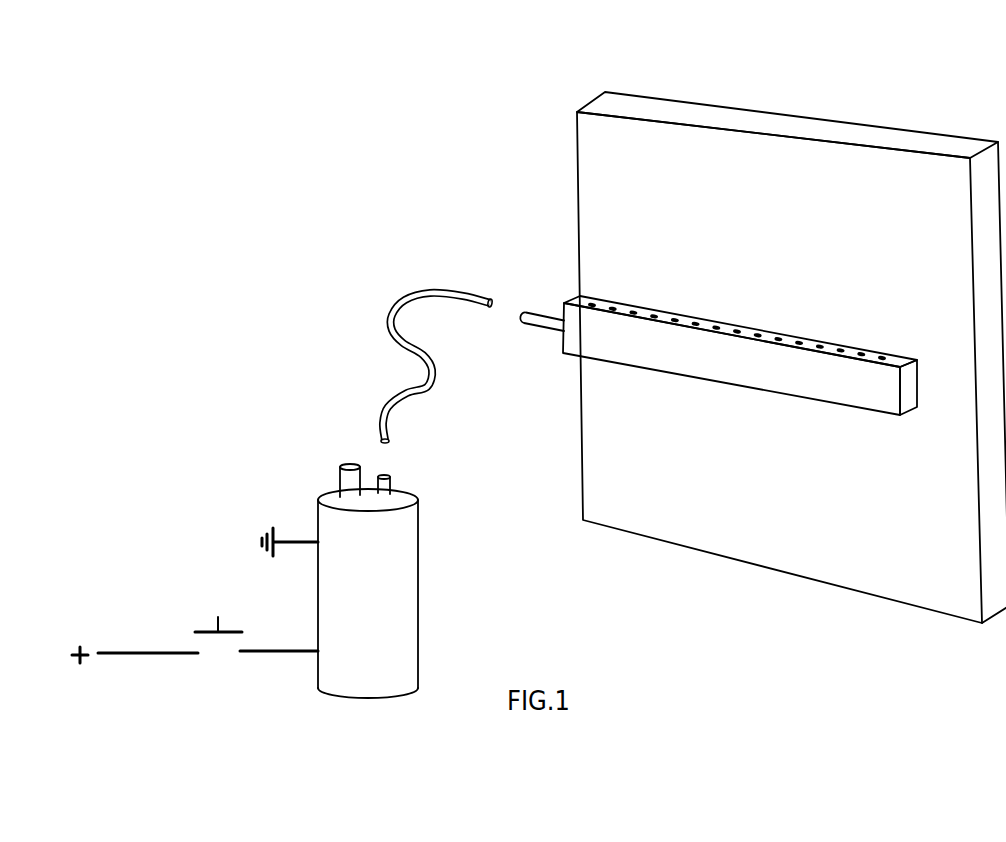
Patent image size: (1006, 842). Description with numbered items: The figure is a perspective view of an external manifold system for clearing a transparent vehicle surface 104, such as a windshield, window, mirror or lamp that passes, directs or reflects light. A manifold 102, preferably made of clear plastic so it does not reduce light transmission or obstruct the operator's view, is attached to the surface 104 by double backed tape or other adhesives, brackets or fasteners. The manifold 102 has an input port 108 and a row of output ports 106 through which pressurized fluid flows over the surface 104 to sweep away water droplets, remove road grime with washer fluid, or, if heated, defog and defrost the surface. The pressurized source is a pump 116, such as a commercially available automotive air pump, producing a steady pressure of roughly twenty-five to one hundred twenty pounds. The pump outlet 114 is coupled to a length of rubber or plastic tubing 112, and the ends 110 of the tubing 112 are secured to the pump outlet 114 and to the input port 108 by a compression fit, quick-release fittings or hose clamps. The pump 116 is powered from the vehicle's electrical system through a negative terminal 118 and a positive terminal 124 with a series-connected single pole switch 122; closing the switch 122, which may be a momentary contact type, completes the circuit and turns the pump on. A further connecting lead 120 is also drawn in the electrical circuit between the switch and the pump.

The manifold 102 is at (737, 222).
The surface 104 is at (736, 338).
The output port 106 is at (668, 227).
The input port 108 is at (491, 231).
The ends of tubing 110 is at (415, 293).
The tubing 112 is at (439, 368).
The pump outlet 114 is at (310, 351).
The pump 116 is at (310, 469).
The negative terminal 118 is at (248, 417).
The lead wire 120 is at (239, 492).
The single pole switch 122 is at (190, 508).
The positive terminal 124 is at (135, 553).